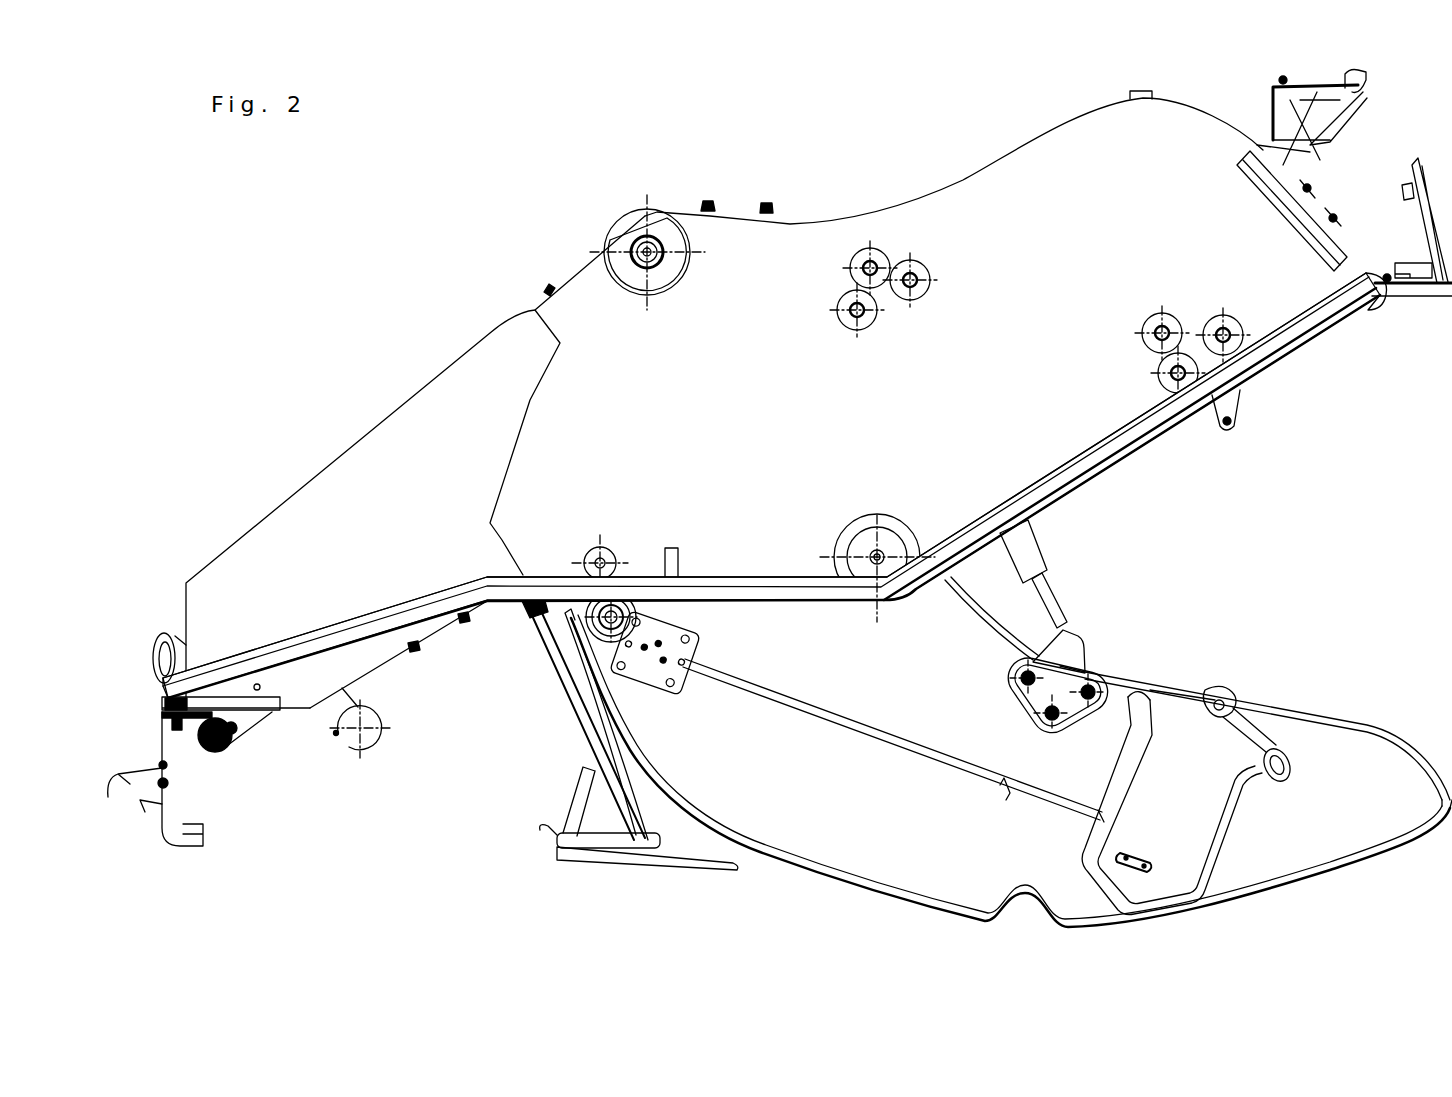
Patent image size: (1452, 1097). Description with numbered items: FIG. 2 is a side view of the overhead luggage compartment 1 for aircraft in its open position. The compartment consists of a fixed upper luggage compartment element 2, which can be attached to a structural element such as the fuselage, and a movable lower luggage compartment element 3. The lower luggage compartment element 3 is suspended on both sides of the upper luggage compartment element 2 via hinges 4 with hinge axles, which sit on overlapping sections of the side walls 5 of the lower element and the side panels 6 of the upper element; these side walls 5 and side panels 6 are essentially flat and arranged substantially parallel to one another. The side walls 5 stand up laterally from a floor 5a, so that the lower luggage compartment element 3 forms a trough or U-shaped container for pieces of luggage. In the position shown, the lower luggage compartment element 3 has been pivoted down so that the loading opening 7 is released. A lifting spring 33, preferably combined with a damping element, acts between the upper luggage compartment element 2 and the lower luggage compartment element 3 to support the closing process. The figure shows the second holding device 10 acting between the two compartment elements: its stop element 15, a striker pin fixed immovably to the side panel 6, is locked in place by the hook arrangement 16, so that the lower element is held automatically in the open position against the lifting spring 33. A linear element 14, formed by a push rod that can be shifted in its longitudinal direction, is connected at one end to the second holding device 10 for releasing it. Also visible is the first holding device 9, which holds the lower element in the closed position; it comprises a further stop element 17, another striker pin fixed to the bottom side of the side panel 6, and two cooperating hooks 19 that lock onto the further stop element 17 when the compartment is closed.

The overhead luggage compartment 1 is at (627, 126).
The upper luggage compartment element 2 is at (1196, 93).
The lower luggage compartment element 3 is at (1356, 703).
The hinges 4 is at (905, 556).
The side walls 5 is at (1367, 828).
The floor 5a is at (1308, 898).
The side panels 6 is at (1067, 160).
The loading opening 7 is at (1284, 551).
The first holding device 9 is at (1205, 655).
The second holding device 10 is at (600, 685).
The linear element 14 is at (907, 748).
The stop element 15 is at (653, 638).
The hook arrangement 16 is at (628, 717).
The further stop element 17 is at (1236, 421).
The cooperating hooks 19 is at (1233, 705).
The lifting spring 33 is at (1040, 587).